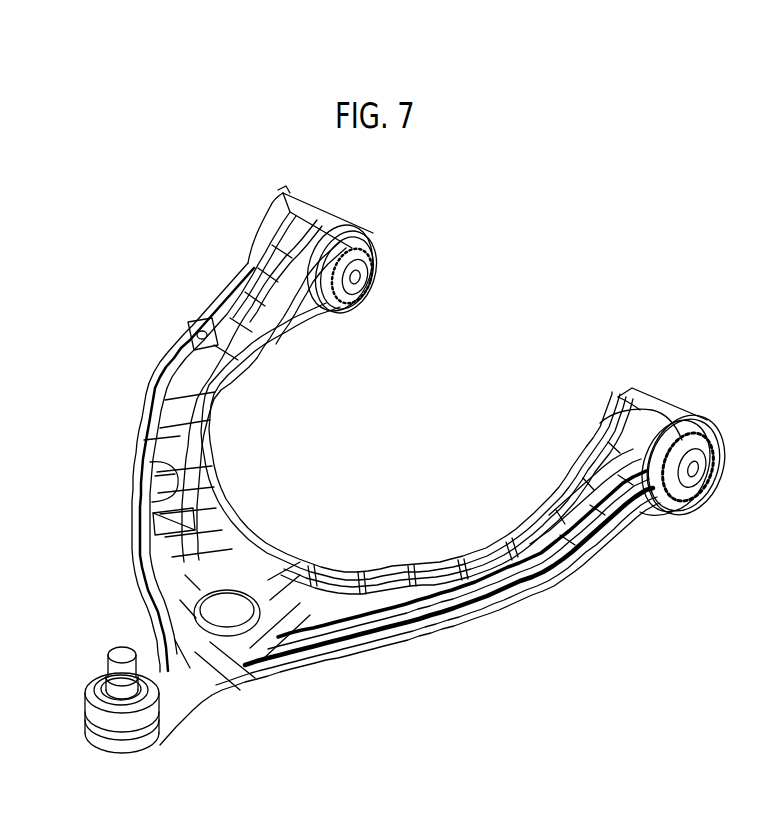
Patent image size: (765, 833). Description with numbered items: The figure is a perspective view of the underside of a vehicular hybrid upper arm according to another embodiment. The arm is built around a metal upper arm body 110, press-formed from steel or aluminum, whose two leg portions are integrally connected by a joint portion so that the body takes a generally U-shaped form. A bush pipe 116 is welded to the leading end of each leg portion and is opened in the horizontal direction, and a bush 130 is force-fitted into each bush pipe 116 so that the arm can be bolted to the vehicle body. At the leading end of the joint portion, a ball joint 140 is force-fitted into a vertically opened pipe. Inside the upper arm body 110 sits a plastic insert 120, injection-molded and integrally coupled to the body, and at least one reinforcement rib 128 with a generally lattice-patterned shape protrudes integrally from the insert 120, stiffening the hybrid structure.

The upper arm body 110 is at (495, 610).
The bush pipe 116 is at (343, 217).
The insert 120 is at (266, 545).
The reinforcement rib 128 is at (148, 468).
The bush 130 is at (368, 247).
The ball joint 140 is at (109, 648).